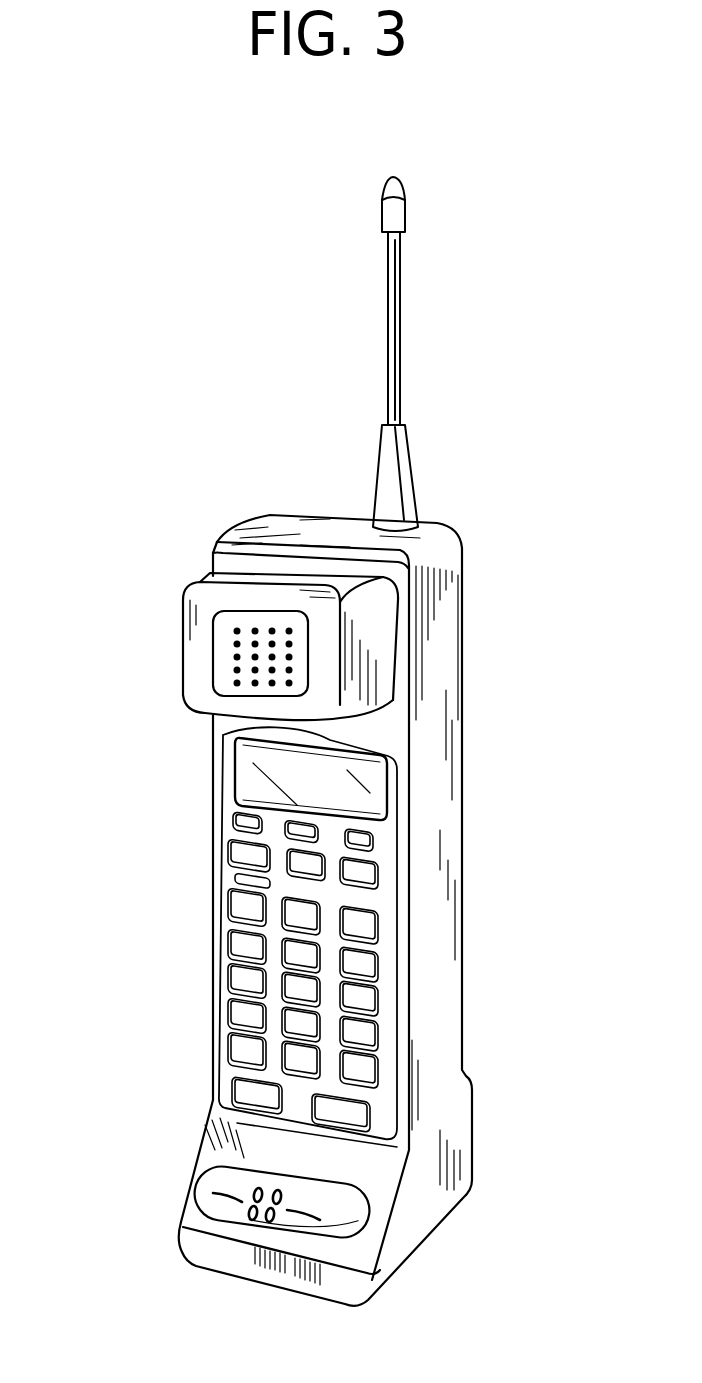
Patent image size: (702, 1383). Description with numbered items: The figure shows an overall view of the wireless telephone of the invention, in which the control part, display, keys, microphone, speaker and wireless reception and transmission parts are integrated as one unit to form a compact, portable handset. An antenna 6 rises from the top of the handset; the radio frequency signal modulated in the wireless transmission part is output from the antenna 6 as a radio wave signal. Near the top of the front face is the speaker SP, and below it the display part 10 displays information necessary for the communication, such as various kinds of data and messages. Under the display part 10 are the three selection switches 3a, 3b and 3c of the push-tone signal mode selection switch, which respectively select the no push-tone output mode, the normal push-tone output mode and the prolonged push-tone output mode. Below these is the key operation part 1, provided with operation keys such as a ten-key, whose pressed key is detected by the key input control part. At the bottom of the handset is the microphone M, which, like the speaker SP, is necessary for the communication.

The antenna 6 is at (392, 332).
The speaker SP is at (245, 650).
The display part 10 is at (245, 763).
The selection switch 3a is at (230, 823).
The selection switch 3b is at (312, 821).
The selection switch 3c is at (367, 881).
The key operation part 1 is at (205, 947).
The microphone M is at (245, 1207).